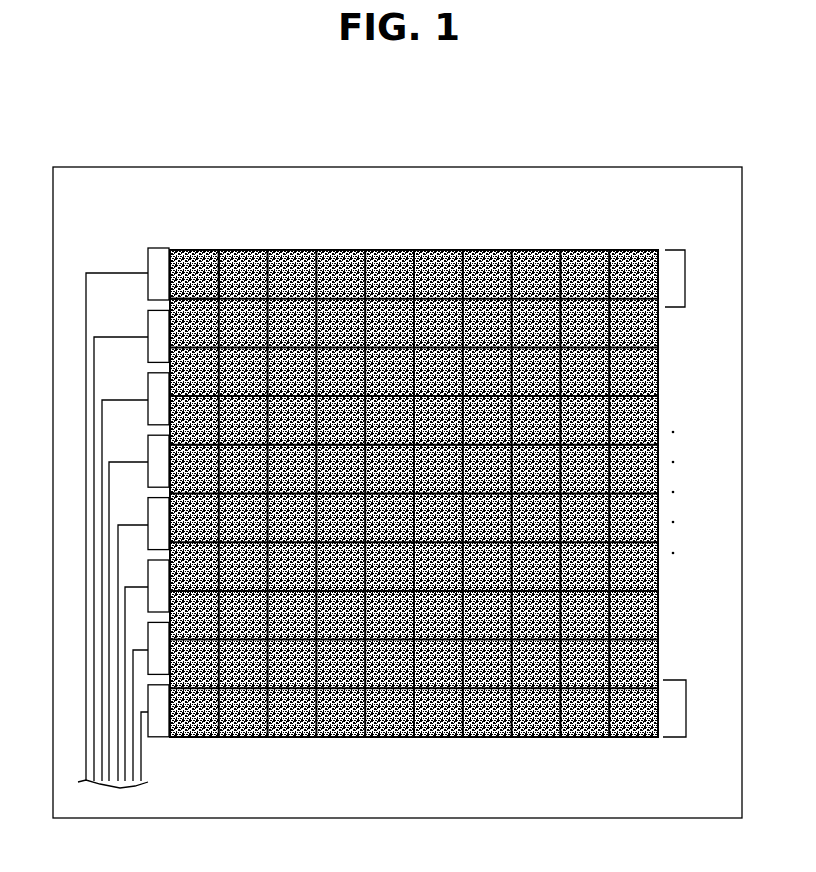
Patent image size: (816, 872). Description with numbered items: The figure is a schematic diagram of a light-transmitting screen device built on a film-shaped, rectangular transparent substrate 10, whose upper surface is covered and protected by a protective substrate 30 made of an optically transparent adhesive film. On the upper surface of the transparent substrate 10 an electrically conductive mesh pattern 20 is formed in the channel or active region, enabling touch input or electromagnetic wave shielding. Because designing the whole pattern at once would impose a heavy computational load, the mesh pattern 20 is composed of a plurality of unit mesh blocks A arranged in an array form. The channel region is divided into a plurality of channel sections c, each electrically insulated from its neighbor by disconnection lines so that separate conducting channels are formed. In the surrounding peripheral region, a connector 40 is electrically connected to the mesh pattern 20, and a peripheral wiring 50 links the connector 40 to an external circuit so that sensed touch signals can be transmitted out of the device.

The transparent substrate 10 is at (397, 454).
The protective substrate 30 is at (647, 167).
The mesh pattern 20 is at (348, 230).
The unit mesh block A is at (197, 250).
The connector 40 is at (158, 250).
The peripheral wiring 50 is at (116, 272).
The channel section C is at (685, 278).